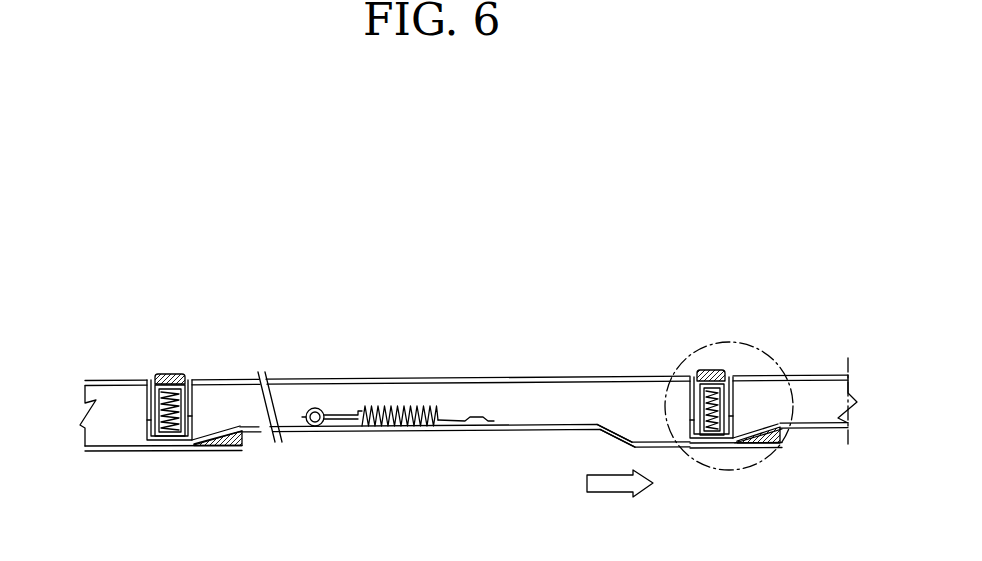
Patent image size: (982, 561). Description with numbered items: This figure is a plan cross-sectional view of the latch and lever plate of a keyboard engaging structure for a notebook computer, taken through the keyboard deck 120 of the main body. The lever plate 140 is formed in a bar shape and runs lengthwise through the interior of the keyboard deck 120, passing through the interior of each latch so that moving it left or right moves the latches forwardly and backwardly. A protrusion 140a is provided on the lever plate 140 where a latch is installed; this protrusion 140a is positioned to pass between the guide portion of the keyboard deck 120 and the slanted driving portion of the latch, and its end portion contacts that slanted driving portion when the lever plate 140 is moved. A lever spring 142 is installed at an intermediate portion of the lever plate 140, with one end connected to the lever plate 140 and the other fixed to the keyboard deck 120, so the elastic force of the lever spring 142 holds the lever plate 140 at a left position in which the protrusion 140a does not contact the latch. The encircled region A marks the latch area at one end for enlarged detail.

The keyboard deck 120 is at (543, 377).
The lever plate 140 is at (510, 432).
The protrusion 140a is at (670, 446).
The lever spring 142 is at (383, 405).
The detail region A is at (772, 355).